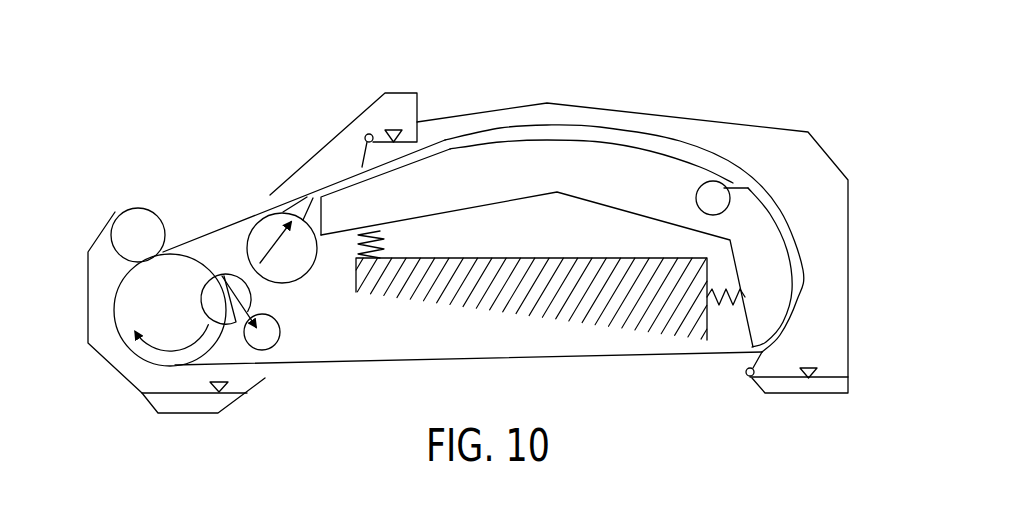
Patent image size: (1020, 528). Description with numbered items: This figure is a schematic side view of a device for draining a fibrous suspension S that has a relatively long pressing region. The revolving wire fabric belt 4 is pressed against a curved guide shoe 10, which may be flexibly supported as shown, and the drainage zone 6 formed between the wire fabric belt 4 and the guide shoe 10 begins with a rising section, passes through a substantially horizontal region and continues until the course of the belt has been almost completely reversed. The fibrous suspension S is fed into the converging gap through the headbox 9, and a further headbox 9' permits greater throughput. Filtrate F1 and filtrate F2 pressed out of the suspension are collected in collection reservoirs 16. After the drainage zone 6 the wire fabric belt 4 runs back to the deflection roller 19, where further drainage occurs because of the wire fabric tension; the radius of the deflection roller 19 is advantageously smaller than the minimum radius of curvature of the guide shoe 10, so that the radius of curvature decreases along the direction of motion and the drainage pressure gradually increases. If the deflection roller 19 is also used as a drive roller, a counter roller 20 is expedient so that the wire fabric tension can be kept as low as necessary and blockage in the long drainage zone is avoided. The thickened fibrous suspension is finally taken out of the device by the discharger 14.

The collection reservoir 16 is at (655, 115).
The guide shoe 10 is at (647, 145).
The drainage zone 6 is at (440, 176).
The headbox 9' is at (726, 219).
The counter roller 20 is at (135, 233).
The fibrous suspension S is at (277, 237).
The headbox 9 is at (287, 255).
The discharger 14 is at (273, 330).
The deflection roller 19 is at (165, 350).
The wire fabric belt 4 is at (442, 358).
The filtrate F1 is at (397, 153).
The filtrate F2 is at (798, 385).